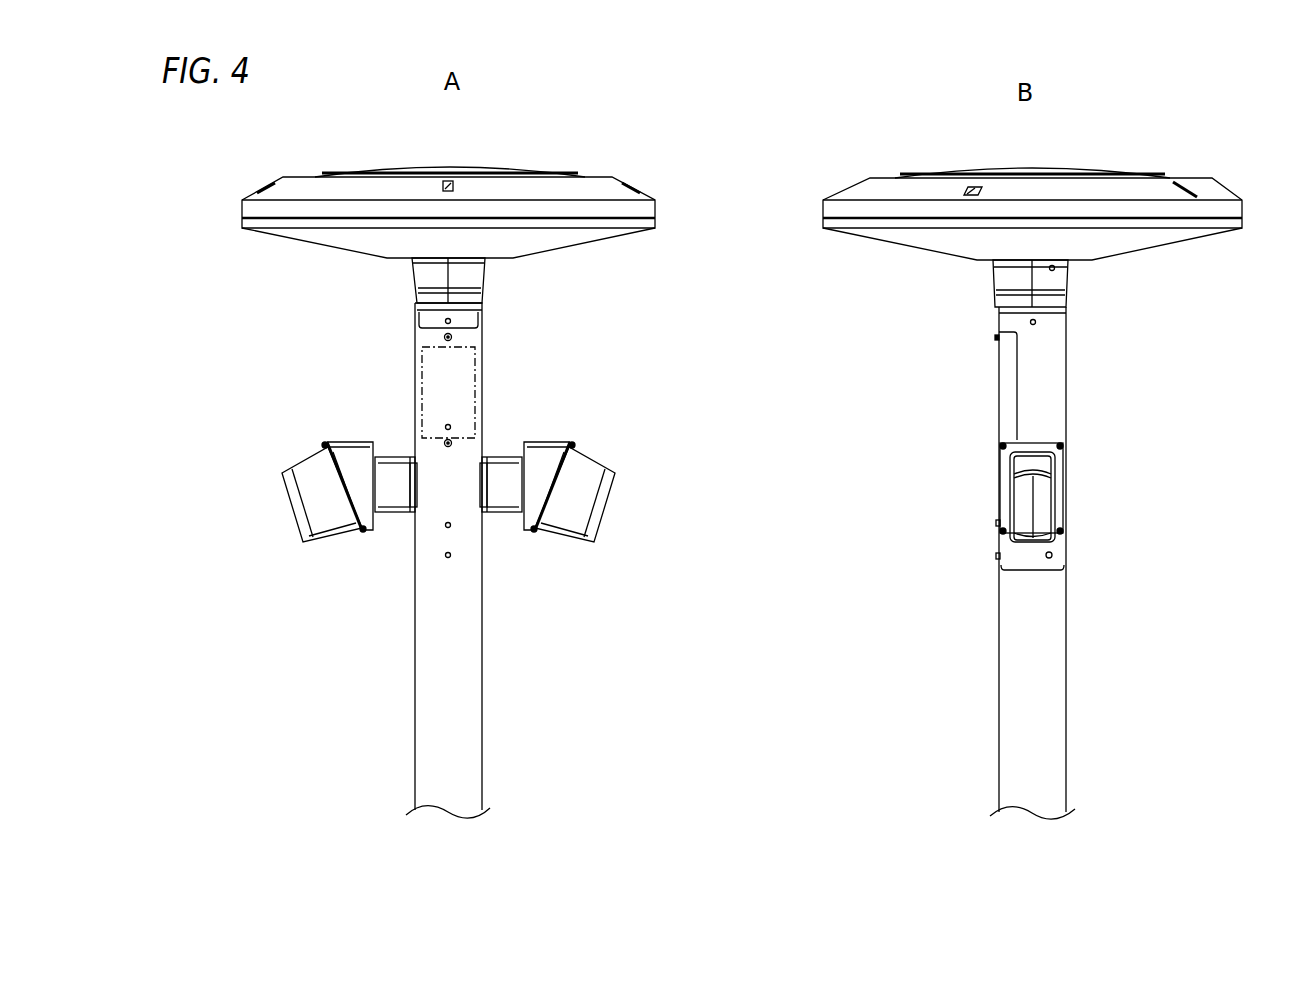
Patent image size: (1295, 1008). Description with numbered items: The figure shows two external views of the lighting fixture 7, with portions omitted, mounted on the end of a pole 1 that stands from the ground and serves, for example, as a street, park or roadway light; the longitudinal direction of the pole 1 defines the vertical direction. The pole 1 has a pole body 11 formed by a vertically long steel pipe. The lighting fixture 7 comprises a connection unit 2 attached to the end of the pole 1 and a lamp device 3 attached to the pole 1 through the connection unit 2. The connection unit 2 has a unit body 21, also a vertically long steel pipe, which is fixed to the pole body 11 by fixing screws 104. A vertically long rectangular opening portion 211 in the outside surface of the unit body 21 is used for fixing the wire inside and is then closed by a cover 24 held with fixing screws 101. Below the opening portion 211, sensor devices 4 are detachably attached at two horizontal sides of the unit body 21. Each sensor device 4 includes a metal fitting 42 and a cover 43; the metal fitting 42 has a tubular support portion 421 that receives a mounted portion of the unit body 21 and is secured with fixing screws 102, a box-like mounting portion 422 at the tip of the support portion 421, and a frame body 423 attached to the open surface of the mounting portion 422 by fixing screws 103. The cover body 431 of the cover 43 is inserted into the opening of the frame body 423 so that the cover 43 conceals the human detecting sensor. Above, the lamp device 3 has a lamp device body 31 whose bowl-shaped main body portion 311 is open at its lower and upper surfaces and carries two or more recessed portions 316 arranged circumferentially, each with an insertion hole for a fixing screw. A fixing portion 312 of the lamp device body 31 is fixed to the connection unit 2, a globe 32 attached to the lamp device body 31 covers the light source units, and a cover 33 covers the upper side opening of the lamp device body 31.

In FIG. 4A, the pole 1 is at (406, 551).
In FIG. 4B, the pole 1 is at (1073, 554).
In FIG. 4A, the pole body 11 is at (424, 709).
In FIG. 4B, the pole body 11 is at (1008, 710).
In FIG. 4A, the connection unit 2 is at (415, 323).
In FIG. 4B, the connection unit 2 is at (1067, 323).
In FIG. 4A, the unit body 21 is at (470, 317).
In FIG. 4B, the unit body 21 is at (1053, 362).
In FIG. 4A, the opening portion 211 is at (420, 365).
In FIG. 4A, the cover 24 is at (465, 370).
In FIG. 4B, the cover 24 is at (1005, 380).
In FIG. 4A, the lamp device 3 is at (440, 200).
In FIG. 4B, the lamp device 3 is at (1022, 205).
In FIG. 4A, the lamp device body 31 is at (293, 183).
In FIG. 4B, the lamp device body 31 is at (853, 195).
In FIG. 4A, the main body portion 311 is at (320, 188).
In FIG. 4B, the main body portion 311 is at (880, 188).
In FIG. 4A, the fixing portion 312 is at (420, 277).
In FIG. 4B, the fixing portion 312 is at (1002, 277).
In FIG. 4A, the recessed portions 316 is at (263, 187).
In FIG. 4B, the recessed portions 316 is at (970, 192).
In FIG. 4A, the globe 32 is at (565, 245).
In FIG. 4B, the globe 32 is at (1100, 245).
In FIG. 4A, the cover 33 is at (380, 172).
In FIG. 4B, the cover 33 is at (960, 172).
In FIG. 4A, the sensor device 4 is at (442, 478).
In FIG. 4B, the sensor device 4 is at (1026, 472).
In FIG. 4A, the metal fitting 42 is at (340, 445).
In FIG. 4A, the support portion 421 is at (395, 513).
In FIG. 4A, the mounting portion 422 is at (365, 442).
In FIG. 4A, the frame body 423 is at (330, 452).
In FIG. 4B, the frame body 423 is at (1062, 460).
In FIG. 4A, the cover 43 is at (290, 487).
In FIG. 4B, the cover 43 is at (1015, 493).
In FIG. 4A, the cover body 431 is at (310, 525).
In FIG. 4B, the cover body 431 is at (1052, 480).
In FIG. 4A, the lighting fixture 7 is at (272, 258).
In FIG. 4B, the lighting fixture 7 is at (1208, 258).
In FIG. 4A, the fixing screws 101 is at (452, 337).
In FIG. 4B, the fixing screws 101 is at (996, 337).
In FIG. 4A, the fixing screws 102 is at (405, 457).
In FIG. 4A, the fixing screws 103 is at (323, 444).
In FIG. 4B, the fixing screws 103 is at (1005, 442).
In FIG. 4A, the fixing screws 104 is at (446, 528).
In FIG. 4B, the fixing screws 104 is at (997, 523).